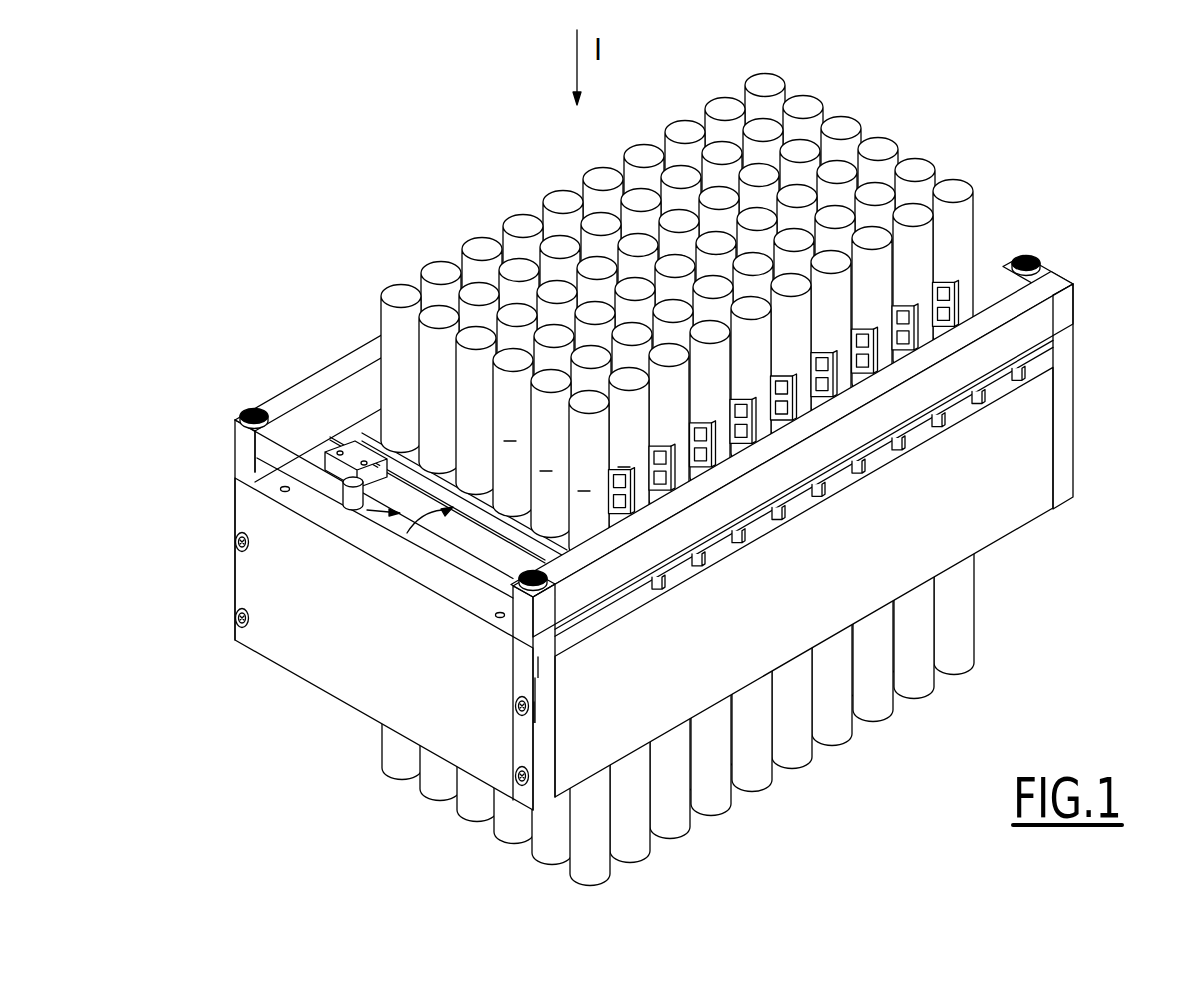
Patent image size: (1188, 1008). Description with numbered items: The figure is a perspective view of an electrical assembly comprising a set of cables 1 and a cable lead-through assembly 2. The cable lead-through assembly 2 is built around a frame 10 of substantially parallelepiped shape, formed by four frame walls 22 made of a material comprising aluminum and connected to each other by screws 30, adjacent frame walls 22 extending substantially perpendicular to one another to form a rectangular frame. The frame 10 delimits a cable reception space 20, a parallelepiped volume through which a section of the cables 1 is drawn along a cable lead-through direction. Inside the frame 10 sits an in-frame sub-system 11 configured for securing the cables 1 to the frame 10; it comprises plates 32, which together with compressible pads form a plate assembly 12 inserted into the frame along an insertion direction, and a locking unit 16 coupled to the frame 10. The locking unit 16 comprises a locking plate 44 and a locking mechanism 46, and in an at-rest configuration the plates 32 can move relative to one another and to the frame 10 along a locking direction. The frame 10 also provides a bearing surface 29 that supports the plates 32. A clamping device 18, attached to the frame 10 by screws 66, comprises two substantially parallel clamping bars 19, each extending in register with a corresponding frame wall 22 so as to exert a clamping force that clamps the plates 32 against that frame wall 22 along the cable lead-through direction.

The cable 1 is at (840, 178).
The cable lead-through assembly 2 is at (986, 99).
The frame 10 is at (600, 737).
The in-frame sub-system 11 is at (520, 190).
The plate assembly 12 is at (415, 224).
The locking unit 16 is at (328, 497).
The clamping device 18 is at (982, 357).
The clamping bar 19 is at (305, 392).
The cable reception space 20 is at (663, 367).
The frame wall 22 is at (335, 668).
The bearing surface 29 is at (838, 482).
The screw 30 is at (234, 617).
The plate 32 is at (650, 548).
The locking plate 44 is at (503, 540).
The locking mechanism 46 is at (328, 445).
The screw 66 is at (238, 425).